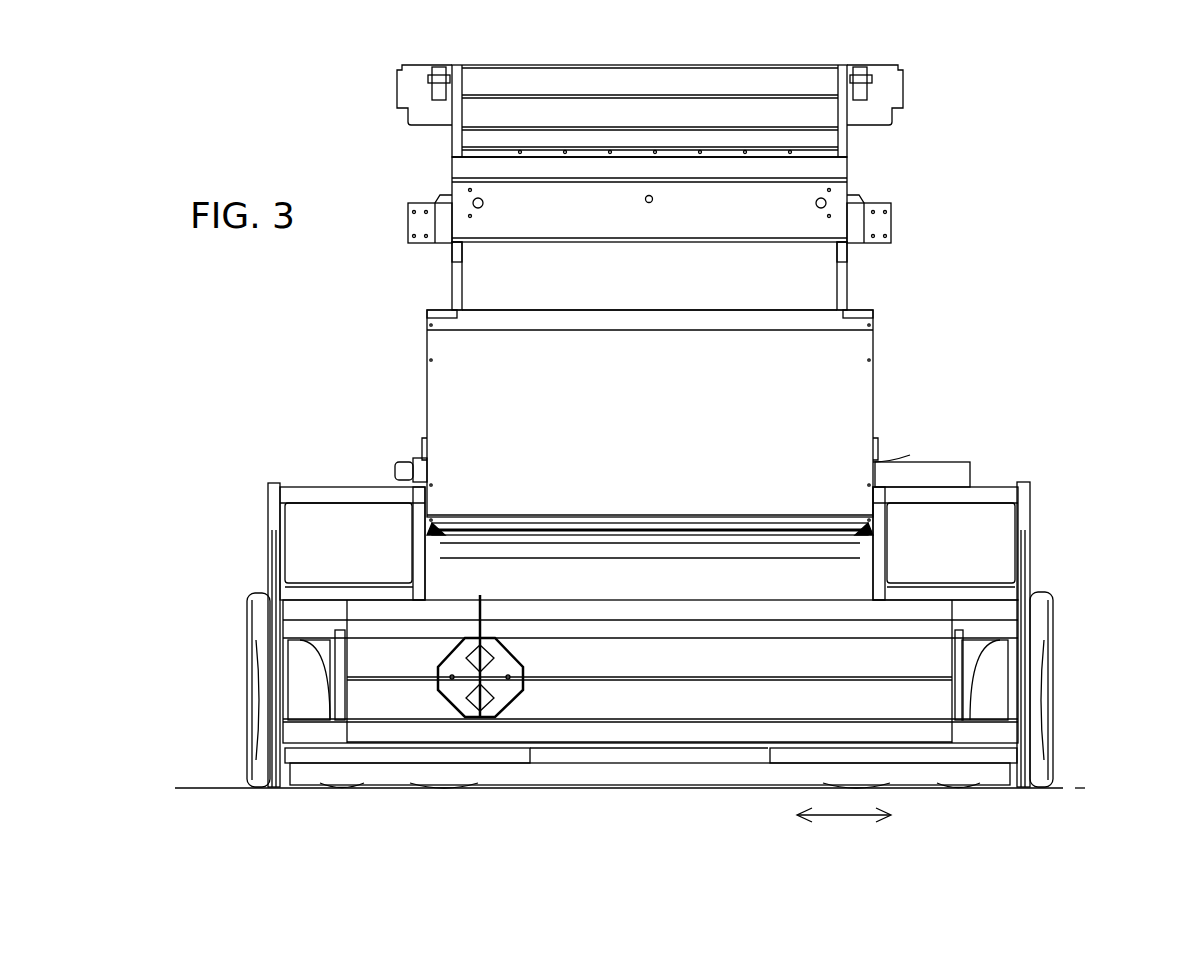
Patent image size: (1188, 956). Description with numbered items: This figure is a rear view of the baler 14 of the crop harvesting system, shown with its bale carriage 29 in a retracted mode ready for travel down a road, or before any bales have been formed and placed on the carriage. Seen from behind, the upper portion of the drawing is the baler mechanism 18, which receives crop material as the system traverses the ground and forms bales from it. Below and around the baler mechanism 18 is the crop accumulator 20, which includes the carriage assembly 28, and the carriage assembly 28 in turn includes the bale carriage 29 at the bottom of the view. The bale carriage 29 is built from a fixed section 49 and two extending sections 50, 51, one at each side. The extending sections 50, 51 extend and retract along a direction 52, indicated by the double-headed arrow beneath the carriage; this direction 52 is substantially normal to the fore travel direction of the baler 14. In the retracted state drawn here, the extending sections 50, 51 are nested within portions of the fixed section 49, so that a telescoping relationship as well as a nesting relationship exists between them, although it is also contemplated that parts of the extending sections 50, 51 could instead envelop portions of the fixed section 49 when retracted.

The baler 14 is at (996, 91).
The baler mechanism 18 is at (850, 289).
The crop accumulator 20 is at (1072, 446).
The carriage assembly 28 is at (1095, 620).
The bale carriage 29 is at (624, 697).
The fixed section 49 is at (340, 493).
The extending section 50 is at (268, 503).
The extending section 51 is at (1030, 508).
The direction 52 is at (850, 816).